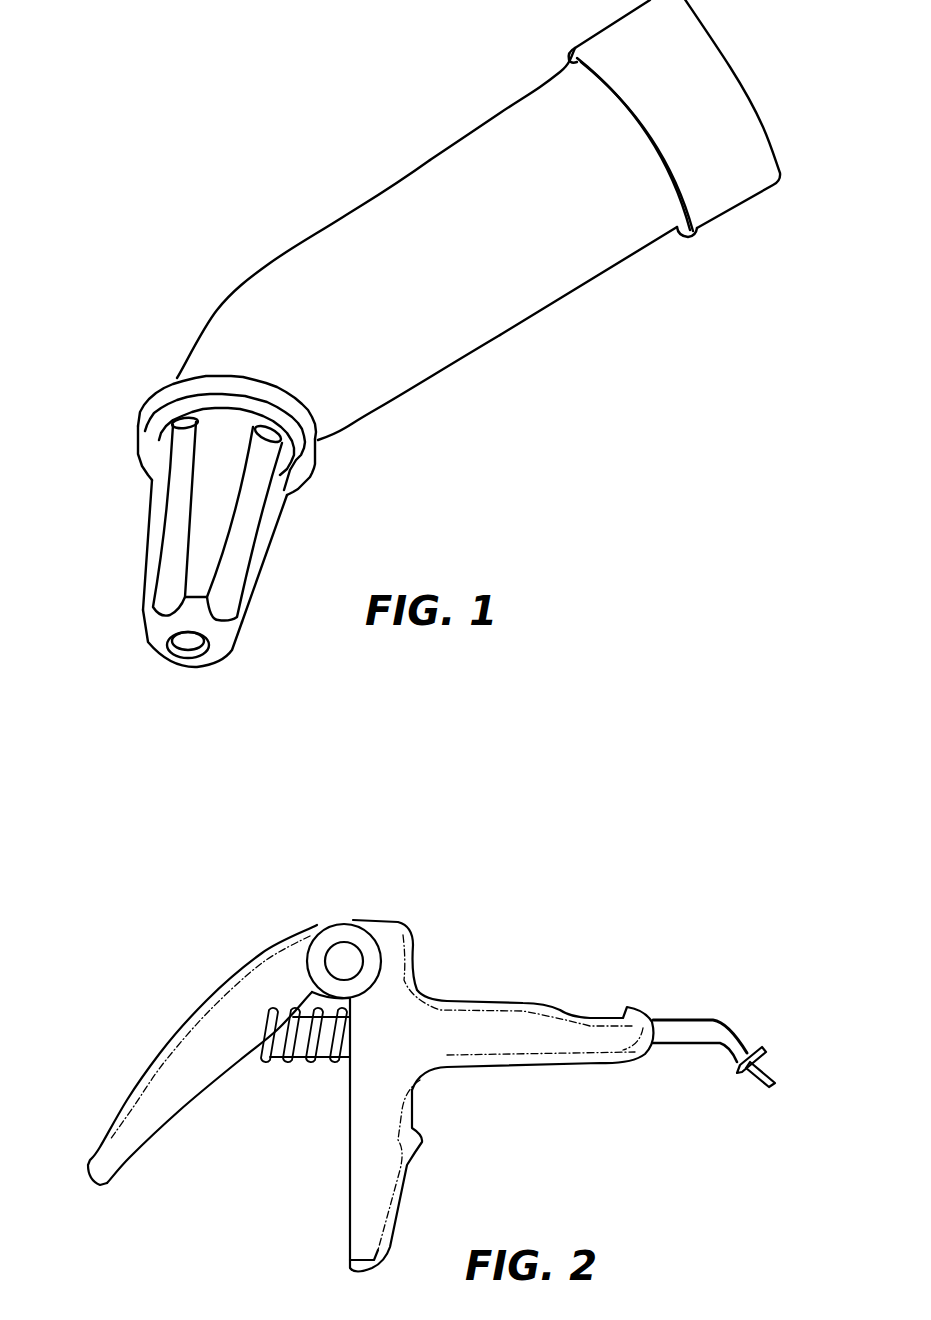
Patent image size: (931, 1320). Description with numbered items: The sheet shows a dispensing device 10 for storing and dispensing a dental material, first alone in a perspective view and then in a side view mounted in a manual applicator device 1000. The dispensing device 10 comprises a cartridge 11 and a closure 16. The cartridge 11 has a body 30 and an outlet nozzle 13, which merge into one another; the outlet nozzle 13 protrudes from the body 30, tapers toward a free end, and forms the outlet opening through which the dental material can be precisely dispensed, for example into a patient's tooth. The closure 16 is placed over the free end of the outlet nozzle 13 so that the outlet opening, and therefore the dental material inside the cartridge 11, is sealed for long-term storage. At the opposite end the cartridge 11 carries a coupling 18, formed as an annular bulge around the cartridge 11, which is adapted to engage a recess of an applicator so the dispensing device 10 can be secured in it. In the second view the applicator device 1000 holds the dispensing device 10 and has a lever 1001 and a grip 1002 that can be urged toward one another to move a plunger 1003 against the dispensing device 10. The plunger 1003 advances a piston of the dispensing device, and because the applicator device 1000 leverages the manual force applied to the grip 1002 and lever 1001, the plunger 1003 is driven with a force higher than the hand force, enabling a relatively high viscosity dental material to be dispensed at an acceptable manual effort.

In FIG. 1, the dispensing device 10 is at (408, 84).
In FIG. 2, the dispensing device 10 is at (671, 998).
In FIG. 1, the cartridge 11 is at (353, 233).
In FIG. 1, the outlet nozzle 13 is at (198, 362).
In FIG. 1, the closure 16 is at (205, 507).
In FIG. 1, the coupling 18 is at (685, 45).
In FIG. 1, the body 30 is at (555, 112).
In FIG. 2, the manual applicator device 1000 is at (397, 1003).
In FIG. 2, the lever 1001 is at (115, 1162).
In FIG. 2, the grip 1002 is at (368, 1233).
In FIG. 2, the plunger 1003 is at (303, 1043).